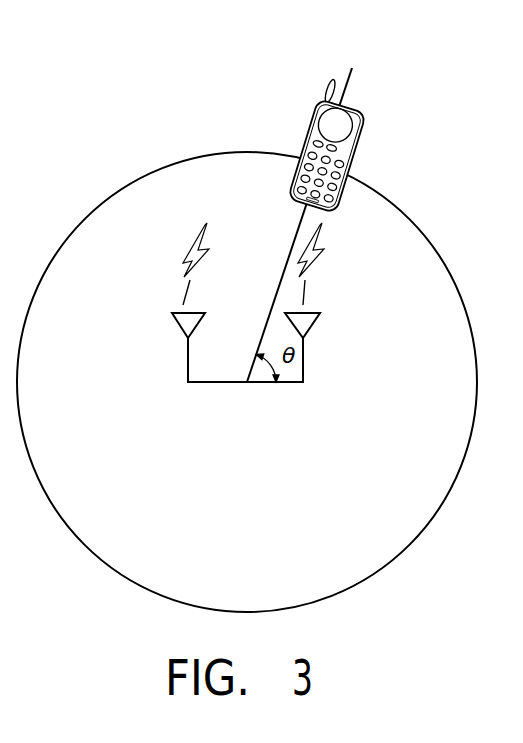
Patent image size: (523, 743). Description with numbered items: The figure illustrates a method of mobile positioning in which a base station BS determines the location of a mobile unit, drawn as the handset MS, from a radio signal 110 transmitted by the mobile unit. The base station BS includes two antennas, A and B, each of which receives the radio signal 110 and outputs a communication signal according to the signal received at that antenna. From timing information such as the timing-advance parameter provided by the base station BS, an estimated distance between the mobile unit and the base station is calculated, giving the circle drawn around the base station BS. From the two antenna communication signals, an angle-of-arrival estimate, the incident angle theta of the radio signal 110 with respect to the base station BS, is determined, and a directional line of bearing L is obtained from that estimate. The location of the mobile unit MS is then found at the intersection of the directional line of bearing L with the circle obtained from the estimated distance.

The radio signal 110 is at (197, 250).
The directional line of bearing L is at (309, 212).
The base station BS is at (203, 383).
The mobile station MS is at (345, 145).